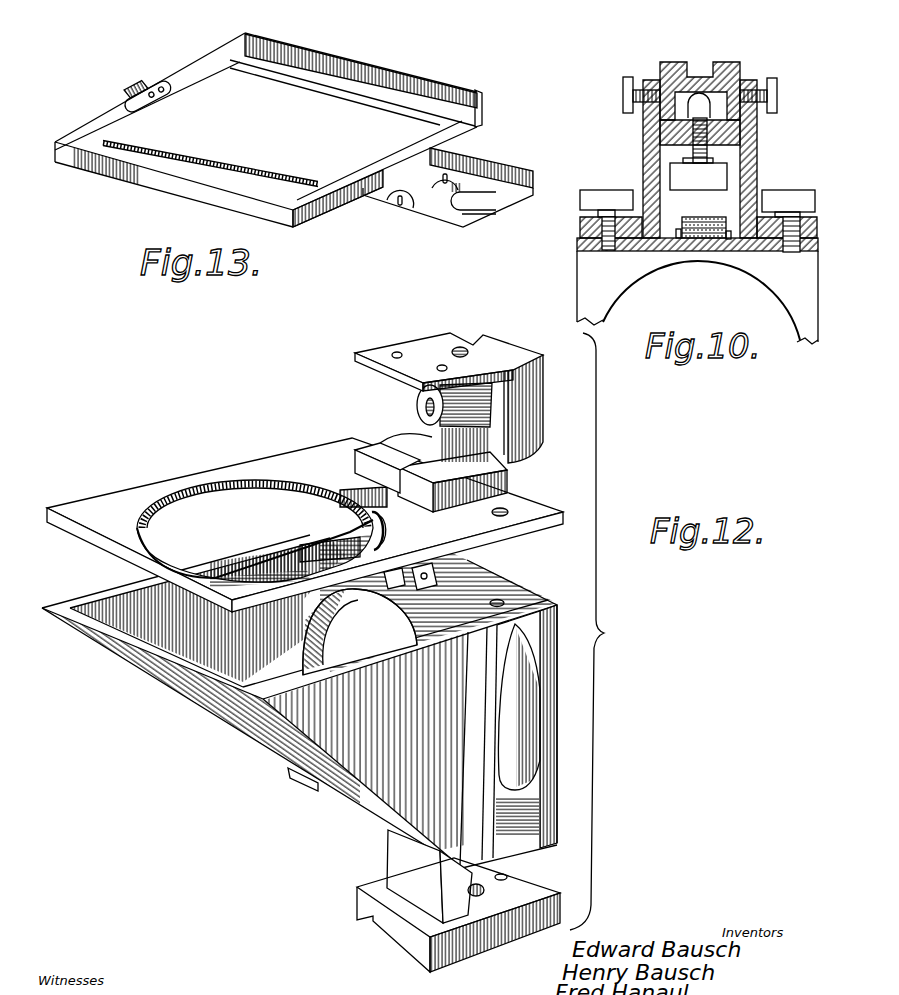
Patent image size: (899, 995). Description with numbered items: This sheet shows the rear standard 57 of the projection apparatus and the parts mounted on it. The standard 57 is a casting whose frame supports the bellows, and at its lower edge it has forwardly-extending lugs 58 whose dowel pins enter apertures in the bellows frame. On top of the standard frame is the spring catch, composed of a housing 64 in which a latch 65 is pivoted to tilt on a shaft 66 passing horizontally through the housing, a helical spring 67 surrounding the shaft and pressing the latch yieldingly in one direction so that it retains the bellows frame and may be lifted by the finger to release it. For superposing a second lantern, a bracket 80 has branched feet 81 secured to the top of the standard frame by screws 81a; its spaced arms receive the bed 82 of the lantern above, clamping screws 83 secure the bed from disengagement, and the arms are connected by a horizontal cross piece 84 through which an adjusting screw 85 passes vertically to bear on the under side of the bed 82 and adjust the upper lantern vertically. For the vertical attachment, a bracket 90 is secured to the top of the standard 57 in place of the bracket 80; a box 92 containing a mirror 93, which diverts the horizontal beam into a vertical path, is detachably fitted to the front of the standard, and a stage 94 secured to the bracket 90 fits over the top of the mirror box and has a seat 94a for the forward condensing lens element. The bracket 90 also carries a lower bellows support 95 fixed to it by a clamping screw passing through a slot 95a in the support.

In FIG. 13, the lower bellows support 95 is at (209, 66).
In FIG. 13, the slot 95a is at (490, 210).
In FIG. 10, the bed 82 is at (713, 74).
In FIG. 10, the clamping screws 83 is at (628, 103).
In FIG. 10, the horizontal cross piece 84 is at (733, 140).
In FIG. 10, the bracket 80 is at (748, 170).
In FIG. 10, the adjusting screw 85 is at (698, 141).
In FIG. 10, the branched feet 81 is at (810, 238).
In FIG. 10, the screws 81a is at (783, 200).
In FIG. 10, the housing 64 is at (690, 218).
In FIG. 12, the housing 64 is at (380, 513).
In FIG. 10, the shaft 66 is at (717, 222).
In FIG. 10, the helical spring 67 is at (690, 239).
In FIG. 10, the latch 65 is at (707, 240).
In FIG. 12, the latch 65 is at (373, 587).
In FIG. 10, the standard 57 is at (757, 253).
In FIG. 12, the standard 57 is at (494, 722).
In FIG. 12, the bracket 90 is at (535, 415).
In FIG. 12, the stage 94 is at (112, 515).
In FIG. 12, the seat 94a is at (267, 488).
In FIG. 12, the mirror 93 is at (173, 660).
In FIG. 12, the box 92 is at (299, 698).
In FIG. 12, the lugs 58 is at (296, 782).